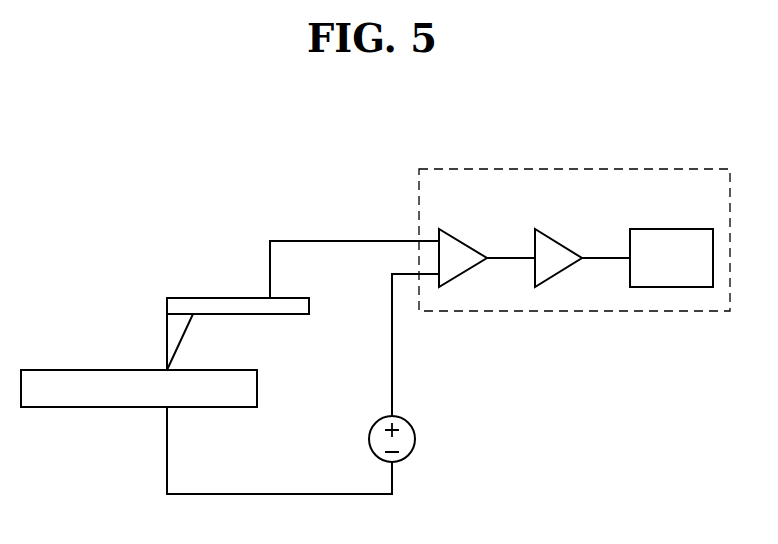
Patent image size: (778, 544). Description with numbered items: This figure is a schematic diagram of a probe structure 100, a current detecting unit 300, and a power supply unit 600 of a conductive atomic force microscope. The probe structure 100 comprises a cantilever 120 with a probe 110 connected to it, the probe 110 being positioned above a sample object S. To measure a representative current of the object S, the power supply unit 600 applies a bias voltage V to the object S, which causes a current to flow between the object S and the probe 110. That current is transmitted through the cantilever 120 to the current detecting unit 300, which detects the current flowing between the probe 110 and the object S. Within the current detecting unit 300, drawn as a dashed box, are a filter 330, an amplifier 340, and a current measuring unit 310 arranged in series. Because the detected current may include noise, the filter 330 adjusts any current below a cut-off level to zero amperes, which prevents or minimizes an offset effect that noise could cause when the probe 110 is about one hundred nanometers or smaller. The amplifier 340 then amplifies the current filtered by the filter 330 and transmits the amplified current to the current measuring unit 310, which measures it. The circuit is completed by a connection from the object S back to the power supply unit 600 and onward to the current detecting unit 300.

The probe structure 100 is at (92, 300).
The cantilever 120 is at (167, 302).
The probe 110 is at (167, 340).
The sample object S is at (257, 388).
The current detecting unit 300 is at (640, 167).
The filter 330 is at (465, 240).
The amplifier 340 is at (562, 240).
The current measuring unit 310 is at (672, 229).
The power supply unit 600 is at (408, 420).